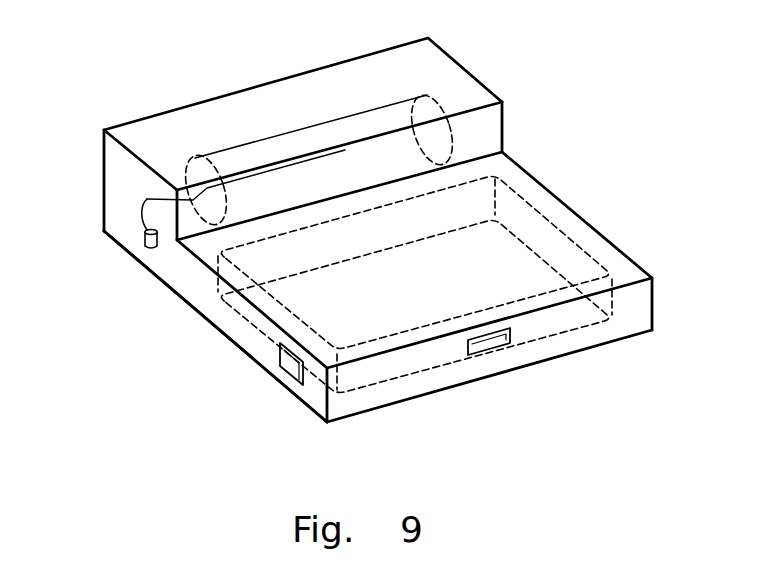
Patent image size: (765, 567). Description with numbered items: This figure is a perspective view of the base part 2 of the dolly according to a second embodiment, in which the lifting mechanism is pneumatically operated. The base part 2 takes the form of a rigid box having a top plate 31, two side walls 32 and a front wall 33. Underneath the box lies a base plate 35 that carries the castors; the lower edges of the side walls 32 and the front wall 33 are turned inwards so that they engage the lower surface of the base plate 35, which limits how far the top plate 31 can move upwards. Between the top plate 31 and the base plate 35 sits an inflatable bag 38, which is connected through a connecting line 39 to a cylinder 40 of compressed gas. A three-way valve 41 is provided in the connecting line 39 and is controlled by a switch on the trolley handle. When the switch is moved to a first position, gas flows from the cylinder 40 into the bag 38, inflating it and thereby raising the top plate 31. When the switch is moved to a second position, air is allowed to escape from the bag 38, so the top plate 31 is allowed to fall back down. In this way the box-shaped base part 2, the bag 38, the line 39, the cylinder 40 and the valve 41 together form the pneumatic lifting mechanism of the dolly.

The base part 2 is at (158, 78).
The top plate 31 is at (468, 265).
The side walls 32 is at (276, 366).
The front wall 33 is at (614, 328).
The base plate 35 is at (428, 393).
The inflatable bag 38 is at (233, 312).
The connecting line 39 is at (147, 199).
The cylinder 40 is at (333, 113).
The three-way valve 41 is at (144, 240).